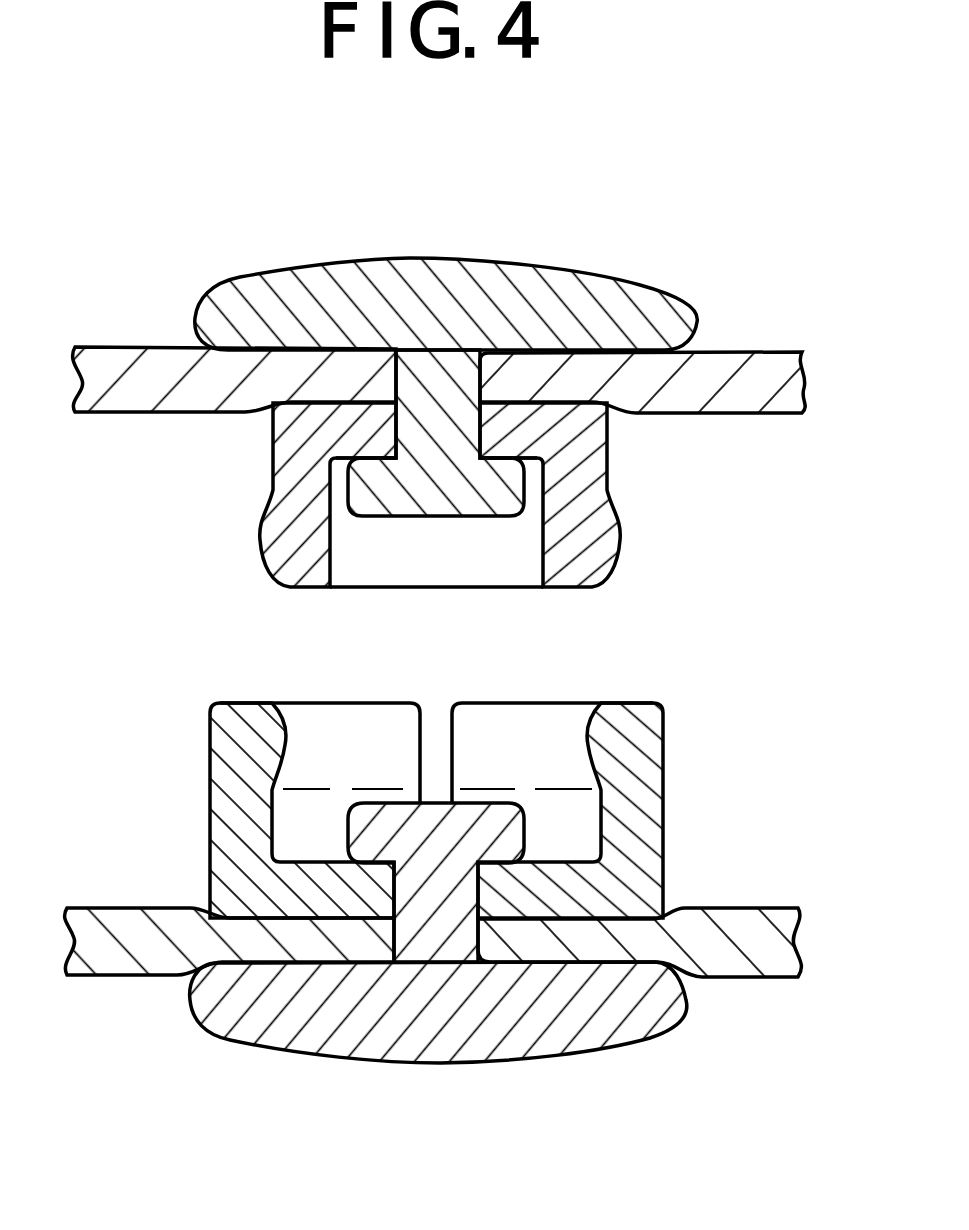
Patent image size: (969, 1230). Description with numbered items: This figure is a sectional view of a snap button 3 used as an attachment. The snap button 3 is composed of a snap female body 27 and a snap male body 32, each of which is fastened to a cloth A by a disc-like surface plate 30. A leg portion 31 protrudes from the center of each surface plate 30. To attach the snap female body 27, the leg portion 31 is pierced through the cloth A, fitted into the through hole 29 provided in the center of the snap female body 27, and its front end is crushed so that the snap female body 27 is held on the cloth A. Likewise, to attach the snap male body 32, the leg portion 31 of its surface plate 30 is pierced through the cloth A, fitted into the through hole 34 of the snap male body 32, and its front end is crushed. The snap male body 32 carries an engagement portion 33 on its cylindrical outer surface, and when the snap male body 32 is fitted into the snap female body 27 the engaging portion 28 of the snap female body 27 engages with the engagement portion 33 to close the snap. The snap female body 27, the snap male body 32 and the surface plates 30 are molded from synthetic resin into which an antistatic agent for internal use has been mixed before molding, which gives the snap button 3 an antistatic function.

The snap button 3 is at (250, 636).
The snap female body 27 is at (678, 822).
The engaging portion 28 is at (595, 748).
The through hole 29 is at (380, 898).
The surface plate 30 is at (450, 312).
The leg portion 31 is at (473, 430).
The snap male body 32 is at (627, 540).
The engagement portion 33 is at (261, 540).
The through hole 34 is at (396, 420).
The cloth A is at (757, 375).